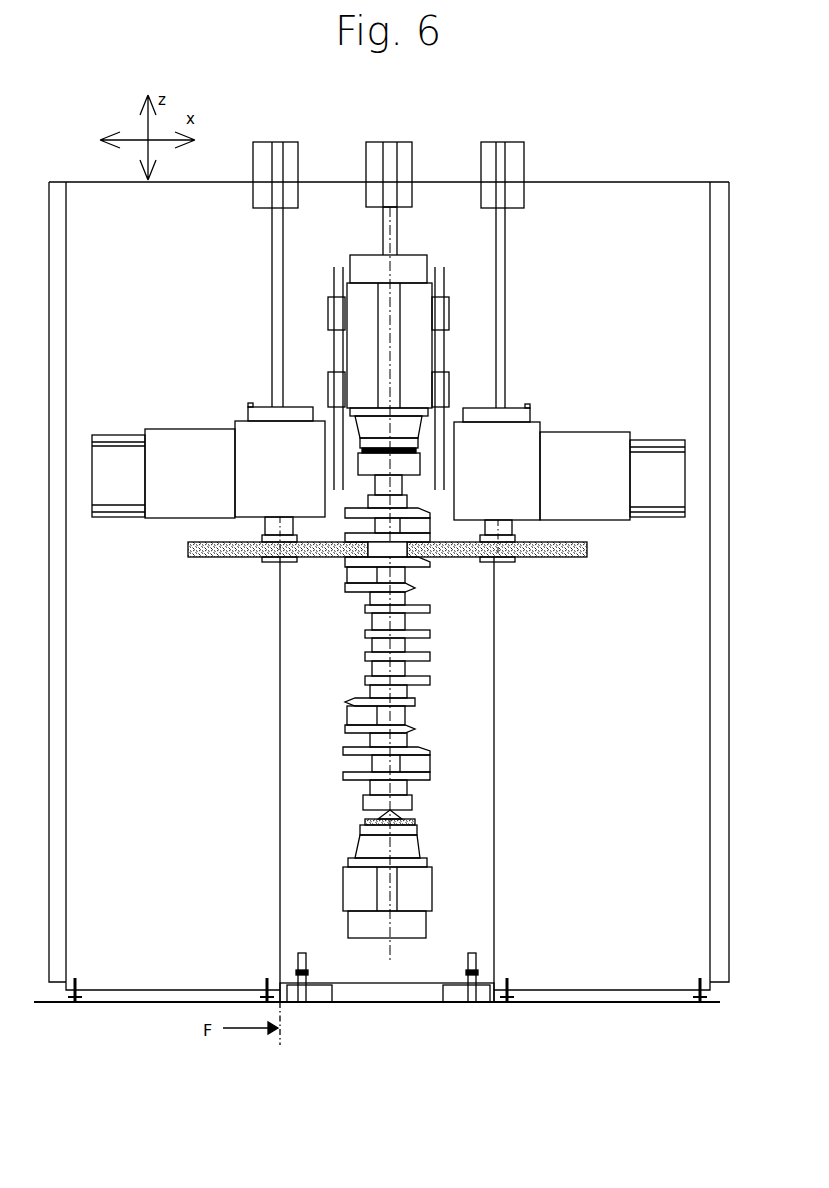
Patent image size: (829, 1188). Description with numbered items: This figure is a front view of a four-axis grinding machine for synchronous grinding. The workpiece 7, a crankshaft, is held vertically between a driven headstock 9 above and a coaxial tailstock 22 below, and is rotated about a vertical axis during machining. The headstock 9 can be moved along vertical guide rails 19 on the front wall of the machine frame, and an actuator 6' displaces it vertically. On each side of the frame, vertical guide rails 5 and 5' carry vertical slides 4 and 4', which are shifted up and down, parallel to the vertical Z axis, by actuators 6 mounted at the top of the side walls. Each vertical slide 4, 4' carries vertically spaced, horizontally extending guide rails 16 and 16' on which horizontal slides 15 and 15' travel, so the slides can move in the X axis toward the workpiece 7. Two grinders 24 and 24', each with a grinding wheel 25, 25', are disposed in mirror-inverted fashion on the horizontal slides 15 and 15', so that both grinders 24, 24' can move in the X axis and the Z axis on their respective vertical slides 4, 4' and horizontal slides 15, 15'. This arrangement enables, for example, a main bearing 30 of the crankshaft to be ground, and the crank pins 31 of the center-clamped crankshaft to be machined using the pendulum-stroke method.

The vertical slide 4 is at (118, 503).
The vertical slide 4' is at (657, 447).
The vertical guide rails 5 is at (296, 274).
The vertical guide rails 5' is at (518, 275).
The actuator 6 is at (388, 159).
The actuator 6' is at (382, 180).
The workpiece 7 is at (346, 652).
The headstock 9 is at (410, 348).
The horizontal slide 15 is at (190, 440).
The horizontal slide 15' is at (588, 445).
The guide rails 16 is at (118, 437).
The guide rails 16' is at (663, 518).
The vertical guide rails 19 is at (440, 288).
The tailstock 22 is at (432, 880).
The grinder 24 is at (512, 460).
The grinder 24' is at (266, 469).
The grinding wheel 25 is at (508, 581).
The grinding wheel 25' is at (274, 582).
The main bearing 30 is at (432, 558).
The crank pins 31 is at (355, 575).